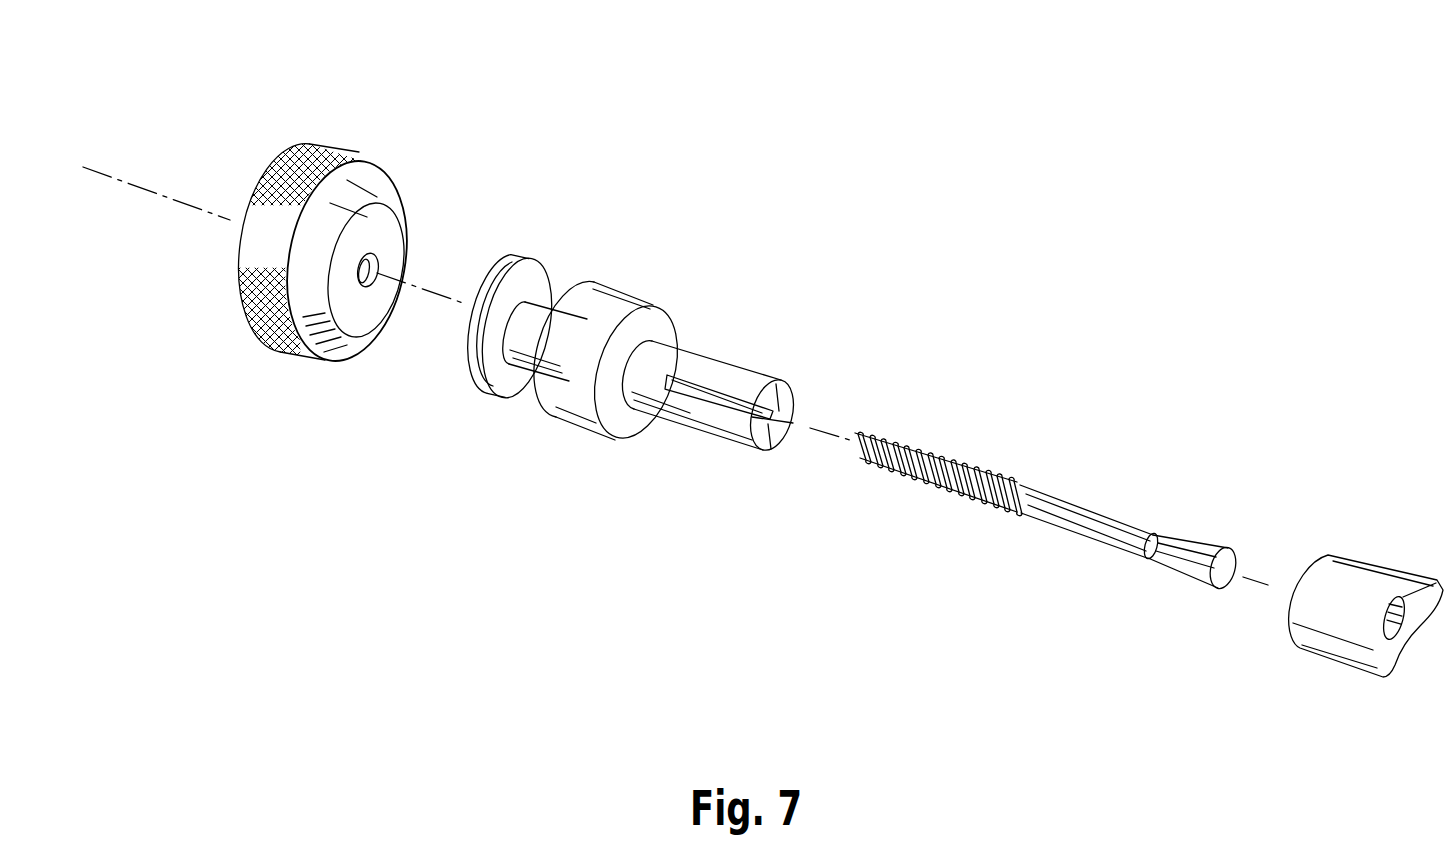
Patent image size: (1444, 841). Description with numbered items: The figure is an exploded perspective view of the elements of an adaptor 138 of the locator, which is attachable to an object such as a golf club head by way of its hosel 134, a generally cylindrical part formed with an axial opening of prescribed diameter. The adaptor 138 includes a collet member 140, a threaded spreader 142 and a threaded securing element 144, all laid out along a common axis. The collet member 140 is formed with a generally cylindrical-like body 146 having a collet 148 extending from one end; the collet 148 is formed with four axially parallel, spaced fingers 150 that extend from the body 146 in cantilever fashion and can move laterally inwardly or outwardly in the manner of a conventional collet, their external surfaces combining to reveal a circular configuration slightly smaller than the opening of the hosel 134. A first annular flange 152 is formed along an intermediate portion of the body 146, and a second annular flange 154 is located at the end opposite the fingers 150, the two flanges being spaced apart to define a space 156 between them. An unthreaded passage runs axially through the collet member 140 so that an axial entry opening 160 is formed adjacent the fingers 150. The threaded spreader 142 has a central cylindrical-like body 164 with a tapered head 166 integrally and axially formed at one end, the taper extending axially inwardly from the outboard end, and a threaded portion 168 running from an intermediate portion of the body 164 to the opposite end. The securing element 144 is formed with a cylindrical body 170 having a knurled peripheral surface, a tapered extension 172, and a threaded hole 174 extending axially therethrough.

The hosel 134 is at (1373, 587).
The adaptor 138 is at (974, 244).
The collet member 140 is at (768, 366).
The threaded spreader 142 is at (1051, 543).
The threaded securing element 144 is at (312, 245).
The body 146 is at (652, 392).
The collet 148 is at (723, 362).
The fingers 150 is at (732, 430).
The first annular flange 152 is at (577, 390).
The second annular flange 154 is at (470, 350).
The space 156 is at (487, 302).
The axial entry opening 160 is at (780, 417).
The central cylindrical-like body 164 is at (1108, 525).
The tapered head 166 is at (1198, 550).
The threaded portion 168 is at (915, 482).
The cylindrical body 170 is at (273, 227).
The tapered extension 172 is at (387, 223).
The threaded hole 174 is at (379, 283).